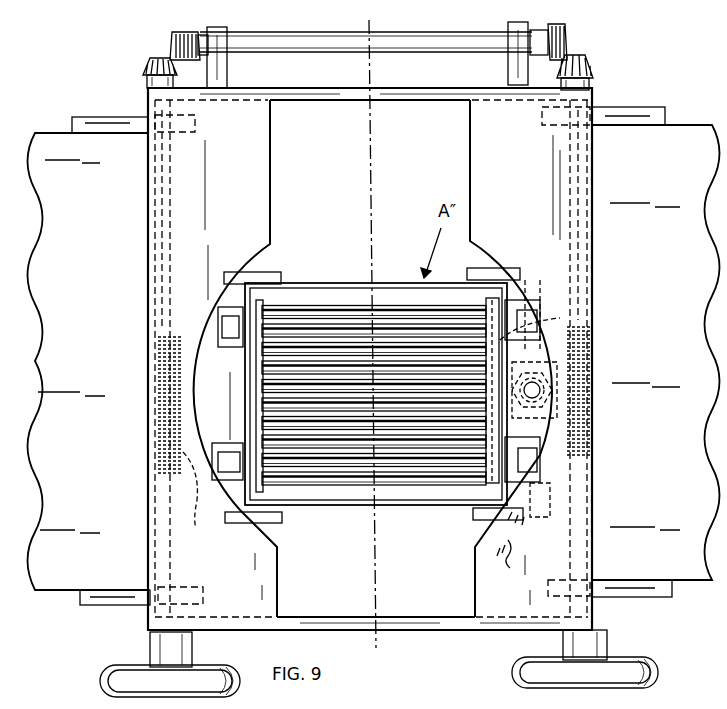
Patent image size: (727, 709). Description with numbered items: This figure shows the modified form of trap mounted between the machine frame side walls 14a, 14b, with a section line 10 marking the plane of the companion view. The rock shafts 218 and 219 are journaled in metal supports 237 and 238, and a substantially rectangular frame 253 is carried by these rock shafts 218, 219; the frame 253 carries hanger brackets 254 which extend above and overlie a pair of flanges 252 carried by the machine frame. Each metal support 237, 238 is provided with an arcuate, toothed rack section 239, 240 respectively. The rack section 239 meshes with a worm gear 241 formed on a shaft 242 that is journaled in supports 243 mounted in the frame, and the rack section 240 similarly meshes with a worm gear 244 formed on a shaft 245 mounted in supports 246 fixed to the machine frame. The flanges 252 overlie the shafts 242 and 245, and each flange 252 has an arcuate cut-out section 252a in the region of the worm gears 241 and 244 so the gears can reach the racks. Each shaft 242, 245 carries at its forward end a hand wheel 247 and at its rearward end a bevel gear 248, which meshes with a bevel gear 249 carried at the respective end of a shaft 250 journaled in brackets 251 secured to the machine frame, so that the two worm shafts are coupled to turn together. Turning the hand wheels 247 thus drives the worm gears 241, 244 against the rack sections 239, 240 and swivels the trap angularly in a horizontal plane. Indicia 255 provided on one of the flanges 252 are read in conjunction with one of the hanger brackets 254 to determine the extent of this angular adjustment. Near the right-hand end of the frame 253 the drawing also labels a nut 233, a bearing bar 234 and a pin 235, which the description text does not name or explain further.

The section line 10 is at (369, 18).
The machine frame side wall 14a is at (592, 166).
The machine frame side wall 14b is at (148, 157).
The rock shaft 218 is at (302, 467).
The rock shaft 219 is at (298, 318).
The nut 233 is at (545, 395).
The bearing bar 234 is at (481, 307).
The pin 235 is at (524, 512).
The metal support 237 is at (235, 427).
The metal support 238 is at (505, 425).
The arcuate toothed rack section 239 is at (195, 528).
The arcuate toothed rack section 240 is at (560, 320).
The worm gear 241 is at (148, 388).
The shaft 242 is at (150, 268).
The support 243 is at (108, 124).
The worm gear 244 is at (592, 356).
The shaft 245 is at (592, 245).
The support 246 is at (630, 115).
The hand wheel 247 is at (112, 683).
The bevel gear 248 is at (150, 62).
The bevel gear 249 is at (175, 38).
The shaft 250 is at (292, 40).
The bracket 251 is at (228, 78).
The flange 252 is at (270, 200).
The arcuate cut-out section 252a is at (236, 364).
The rectangular frame 253 is at (345, 285).
The hanger bracket 254 is at (268, 274).
The indicia 255 is at (512, 555).